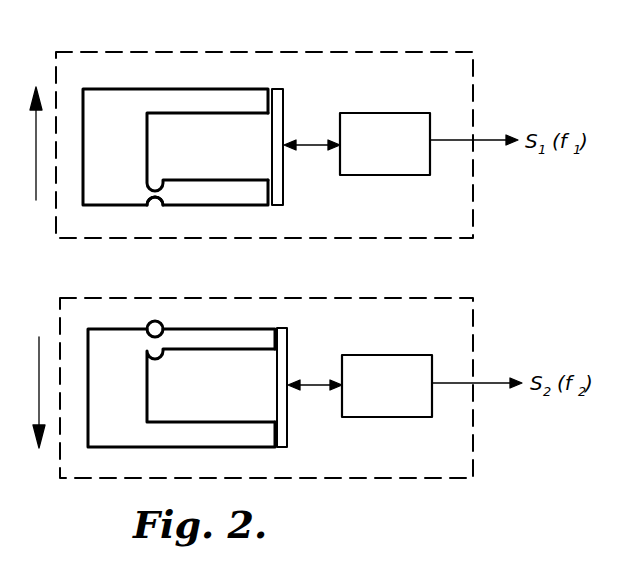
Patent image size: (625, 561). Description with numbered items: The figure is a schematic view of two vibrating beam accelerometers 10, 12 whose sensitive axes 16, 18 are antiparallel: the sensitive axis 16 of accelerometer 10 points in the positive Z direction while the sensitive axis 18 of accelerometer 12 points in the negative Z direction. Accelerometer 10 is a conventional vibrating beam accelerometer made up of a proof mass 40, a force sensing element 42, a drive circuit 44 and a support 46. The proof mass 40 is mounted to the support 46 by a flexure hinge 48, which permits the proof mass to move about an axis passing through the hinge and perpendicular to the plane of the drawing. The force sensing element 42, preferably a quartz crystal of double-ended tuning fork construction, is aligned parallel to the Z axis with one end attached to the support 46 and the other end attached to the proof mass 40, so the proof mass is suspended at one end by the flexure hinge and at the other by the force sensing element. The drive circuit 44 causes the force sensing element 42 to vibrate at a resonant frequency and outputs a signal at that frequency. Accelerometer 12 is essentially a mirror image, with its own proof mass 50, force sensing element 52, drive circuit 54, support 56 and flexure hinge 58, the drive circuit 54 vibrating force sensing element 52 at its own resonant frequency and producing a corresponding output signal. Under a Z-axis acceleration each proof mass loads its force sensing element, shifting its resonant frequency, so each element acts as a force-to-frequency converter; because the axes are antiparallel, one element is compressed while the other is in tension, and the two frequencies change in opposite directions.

The vibrating beam accelerometer 10 is at (413, 51).
The vibrating beam accelerometer 12 is at (390, 478).
The sensitive axis 16 is at (30, 130).
The sensitive axis 18 is at (39, 409).
The proof mass 40 is at (228, 197).
The force sensing element 42 is at (284, 97).
The drive circuit 44 is at (380, 113).
The support 46 is at (147, 152).
The flexure hinge 48 is at (157, 200).
The proof mass 50 is at (222, 343).
The force sensing element 52 is at (288, 338).
The drive circuit 54 is at (380, 355).
The support 56 is at (147, 385).
The flexure hinge 58 is at (156, 336).